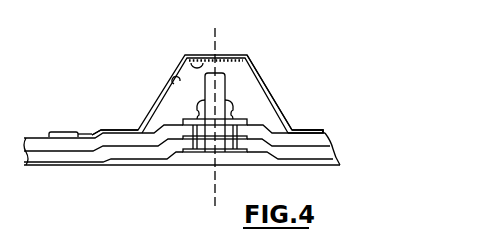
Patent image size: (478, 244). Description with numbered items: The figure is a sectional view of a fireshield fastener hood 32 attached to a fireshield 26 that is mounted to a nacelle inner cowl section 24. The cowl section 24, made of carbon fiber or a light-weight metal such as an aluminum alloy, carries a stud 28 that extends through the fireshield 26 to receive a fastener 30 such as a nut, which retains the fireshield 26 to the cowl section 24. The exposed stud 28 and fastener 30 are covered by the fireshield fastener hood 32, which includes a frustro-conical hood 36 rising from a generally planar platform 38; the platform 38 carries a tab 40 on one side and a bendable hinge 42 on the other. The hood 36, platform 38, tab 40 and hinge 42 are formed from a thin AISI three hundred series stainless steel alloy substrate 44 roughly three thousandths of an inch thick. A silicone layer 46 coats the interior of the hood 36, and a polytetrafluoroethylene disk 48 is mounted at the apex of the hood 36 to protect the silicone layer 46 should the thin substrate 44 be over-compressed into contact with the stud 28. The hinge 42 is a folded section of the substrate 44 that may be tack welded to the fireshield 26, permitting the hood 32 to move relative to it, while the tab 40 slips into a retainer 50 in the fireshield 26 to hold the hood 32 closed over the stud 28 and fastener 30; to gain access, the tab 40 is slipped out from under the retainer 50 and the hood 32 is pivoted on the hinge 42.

The inner cowl section 24 is at (336, 163).
The fireshield 26 is at (322, 140).
The stud 28 is at (209, 149).
The fastener 30 is at (174, 82).
The fireshield fastener hood 32 is at (224, 98).
The frustro-conical hood 36 is at (224, 97).
The platform 38 is at (313, 129).
The tab 40 is at (116, 130).
The bendable hinge 42 is at (310, 134).
The stainless steel alloy substrate 44 is at (263, 82).
The silicone layer 46 is at (198, 108).
The polytetrafluoroethylene disk 48 is at (198, 64).
The retainer 50 is at (68, 138).